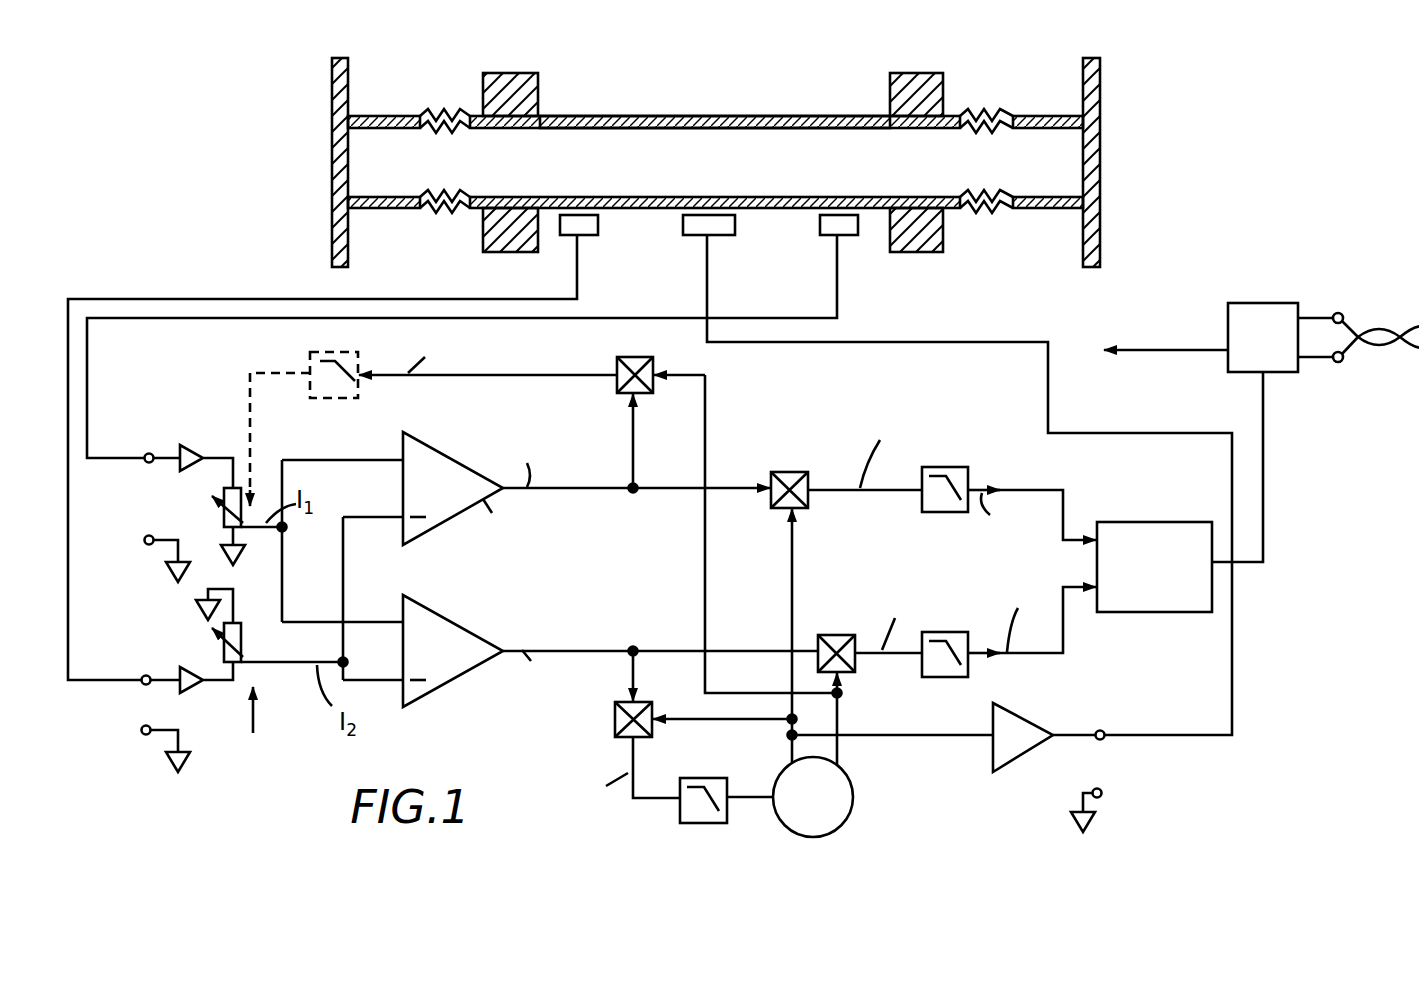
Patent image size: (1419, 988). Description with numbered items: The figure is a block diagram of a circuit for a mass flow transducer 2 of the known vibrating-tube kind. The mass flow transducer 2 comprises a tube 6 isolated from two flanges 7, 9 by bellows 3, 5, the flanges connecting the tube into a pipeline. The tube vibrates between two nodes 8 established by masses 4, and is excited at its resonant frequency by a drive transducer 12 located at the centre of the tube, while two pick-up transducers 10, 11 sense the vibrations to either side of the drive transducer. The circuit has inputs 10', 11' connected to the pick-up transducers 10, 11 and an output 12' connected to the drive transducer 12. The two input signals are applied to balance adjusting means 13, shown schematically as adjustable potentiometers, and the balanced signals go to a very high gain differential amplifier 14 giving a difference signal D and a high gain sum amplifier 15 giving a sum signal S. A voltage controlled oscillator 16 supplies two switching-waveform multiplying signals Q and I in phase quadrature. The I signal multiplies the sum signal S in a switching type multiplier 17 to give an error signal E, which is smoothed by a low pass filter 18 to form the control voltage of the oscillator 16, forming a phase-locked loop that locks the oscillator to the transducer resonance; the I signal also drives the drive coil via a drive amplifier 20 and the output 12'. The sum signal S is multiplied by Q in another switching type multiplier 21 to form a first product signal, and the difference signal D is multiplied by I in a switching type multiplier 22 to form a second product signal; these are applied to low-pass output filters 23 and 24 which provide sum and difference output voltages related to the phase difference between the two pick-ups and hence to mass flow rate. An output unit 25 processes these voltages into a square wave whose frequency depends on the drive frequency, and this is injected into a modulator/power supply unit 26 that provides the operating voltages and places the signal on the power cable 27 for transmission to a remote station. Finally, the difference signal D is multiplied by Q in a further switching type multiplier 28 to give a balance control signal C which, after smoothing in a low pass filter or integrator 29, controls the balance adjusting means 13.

The mass flow transducer 2 is at (632, 112).
The bellows 3 is at (430, 116).
The masses 4 is at (537, 76).
The bellows 5 is at (988, 110).
The tube 6 is at (728, 116).
The flange 7 is at (333, 252).
The nodes 8 is at (505, 140).
The flange 9 is at (1092, 250).
The pick-up transducer 10 is at (495, 336).
The pick-up transducer 11 is at (333, 447).
The drive transducer 12 is at (957, 475).
The input 10' is at (186, 513).
The input 11' is at (212, 680).
The output 12' is at (1076, 816).
The balance adjusting means 13 is at (272, 715).
The differential amplifier 14 is at (515, 494).
The sum amplifier 15 is at (440, 690).
The voltage controlled oscillator 16 is at (845, 822).
The switching type multiplier 17 is at (613, 710).
The low pass filter 18 is at (722, 824).
The drive amplifier 20 is at (1035, 748).
The switching type multiplier 21 is at (836, 634).
The switching type multiplier 22 is at (793, 470).
The low-pass output filter 23 is at (958, 632).
The low-pass output filter 24 is at (955, 466).
The output unit 25 is at (1137, 612).
The modulator/power supply unit 26 is at (1297, 375).
The power cable 27 is at (1407, 346).
The switching type multiplier 28 is at (612, 389).
The low pass filter or integrator 29 is at (352, 398).